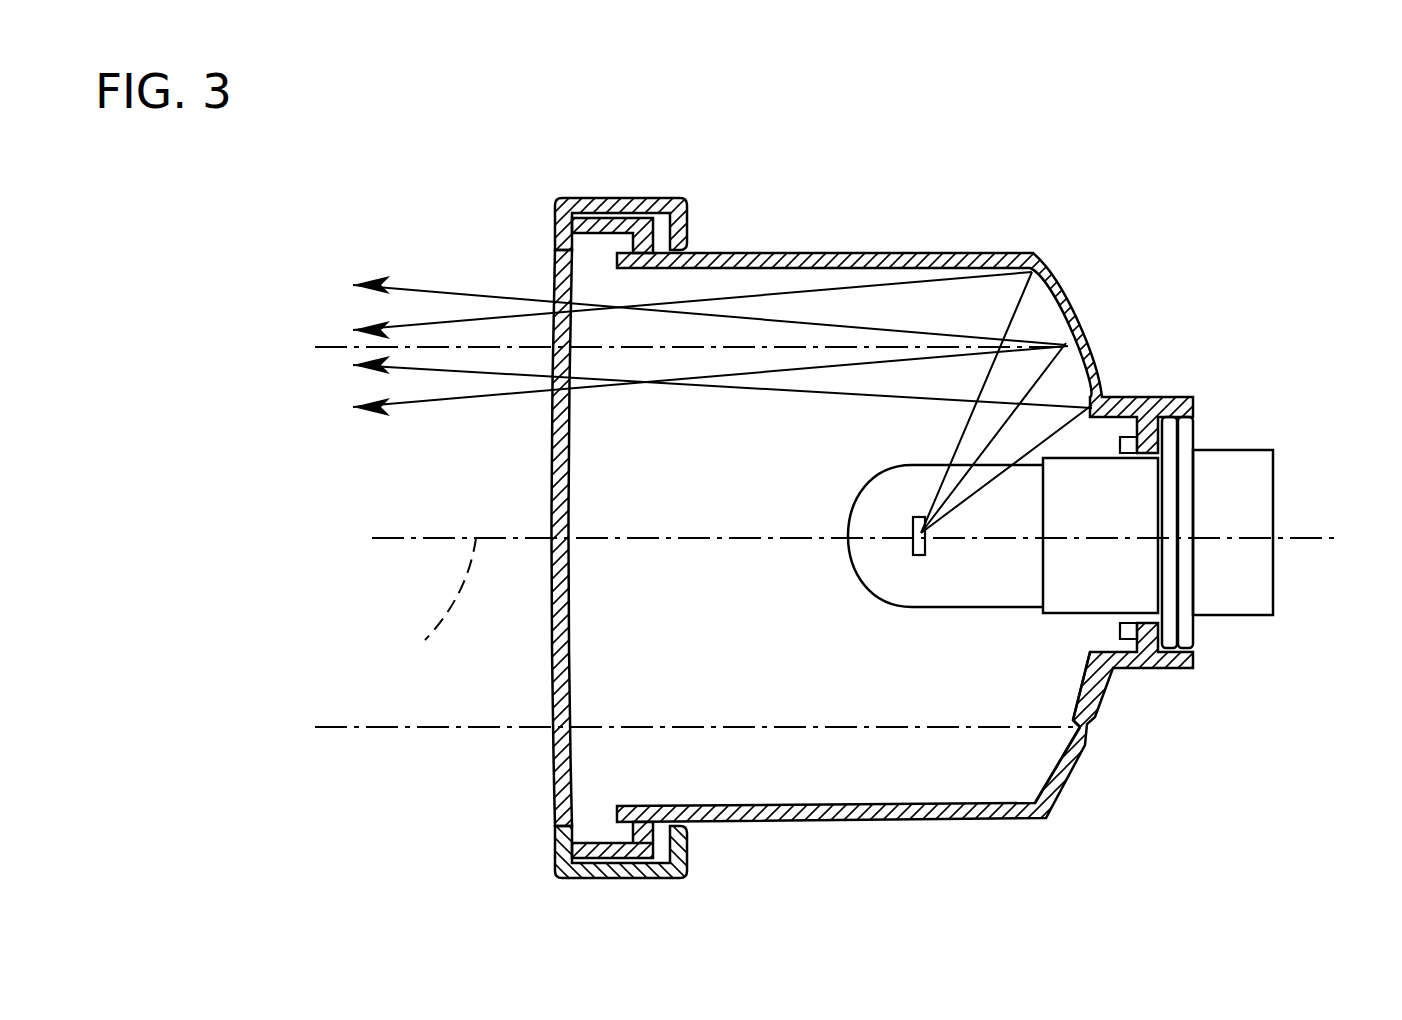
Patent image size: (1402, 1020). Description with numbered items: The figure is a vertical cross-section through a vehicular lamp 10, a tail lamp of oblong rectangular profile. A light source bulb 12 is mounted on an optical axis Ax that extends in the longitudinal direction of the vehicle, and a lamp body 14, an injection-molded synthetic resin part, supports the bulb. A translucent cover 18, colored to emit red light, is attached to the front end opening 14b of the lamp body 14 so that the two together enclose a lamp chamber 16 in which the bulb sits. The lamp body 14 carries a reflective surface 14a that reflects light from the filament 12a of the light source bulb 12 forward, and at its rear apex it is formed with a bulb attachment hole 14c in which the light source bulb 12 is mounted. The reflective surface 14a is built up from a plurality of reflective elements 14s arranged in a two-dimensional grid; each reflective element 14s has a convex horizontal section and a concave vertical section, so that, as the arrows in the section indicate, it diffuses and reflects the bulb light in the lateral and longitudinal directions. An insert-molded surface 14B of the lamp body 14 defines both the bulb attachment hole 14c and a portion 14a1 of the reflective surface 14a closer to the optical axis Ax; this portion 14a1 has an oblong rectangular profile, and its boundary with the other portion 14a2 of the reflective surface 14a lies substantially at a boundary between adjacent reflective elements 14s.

The vehicular lamp 10 is at (1098, 172).
The light source bulb 12 is at (860, 472).
The filament 12a is at (918, 540).
The lamp body 14 is at (1072, 274).
The reflective surface 14a is at (790, 635).
The portion closer to the optical axis 14a1 is at (1092, 683).
The other portion 14a2 is at (1043, 797).
The reflective element 14s is at (1063, 768).
The front end opening 14b is at (647, 812).
The bulb attachment hole 14c is at (1163, 455).
The insert-molded surface 14B is at (315, 350).
The lamp chamber 16 is at (716, 518).
The translucent cover 18 is at (546, 250).
The optical axis Ax is at (430, 607).